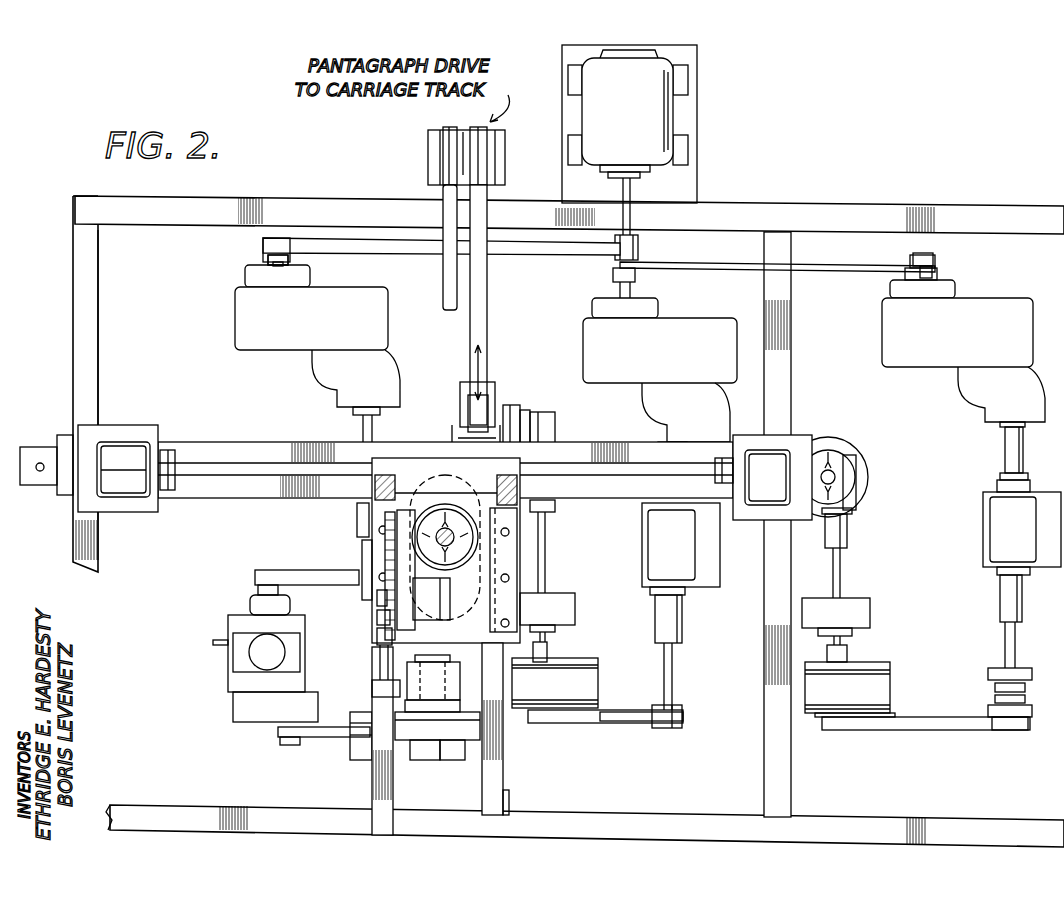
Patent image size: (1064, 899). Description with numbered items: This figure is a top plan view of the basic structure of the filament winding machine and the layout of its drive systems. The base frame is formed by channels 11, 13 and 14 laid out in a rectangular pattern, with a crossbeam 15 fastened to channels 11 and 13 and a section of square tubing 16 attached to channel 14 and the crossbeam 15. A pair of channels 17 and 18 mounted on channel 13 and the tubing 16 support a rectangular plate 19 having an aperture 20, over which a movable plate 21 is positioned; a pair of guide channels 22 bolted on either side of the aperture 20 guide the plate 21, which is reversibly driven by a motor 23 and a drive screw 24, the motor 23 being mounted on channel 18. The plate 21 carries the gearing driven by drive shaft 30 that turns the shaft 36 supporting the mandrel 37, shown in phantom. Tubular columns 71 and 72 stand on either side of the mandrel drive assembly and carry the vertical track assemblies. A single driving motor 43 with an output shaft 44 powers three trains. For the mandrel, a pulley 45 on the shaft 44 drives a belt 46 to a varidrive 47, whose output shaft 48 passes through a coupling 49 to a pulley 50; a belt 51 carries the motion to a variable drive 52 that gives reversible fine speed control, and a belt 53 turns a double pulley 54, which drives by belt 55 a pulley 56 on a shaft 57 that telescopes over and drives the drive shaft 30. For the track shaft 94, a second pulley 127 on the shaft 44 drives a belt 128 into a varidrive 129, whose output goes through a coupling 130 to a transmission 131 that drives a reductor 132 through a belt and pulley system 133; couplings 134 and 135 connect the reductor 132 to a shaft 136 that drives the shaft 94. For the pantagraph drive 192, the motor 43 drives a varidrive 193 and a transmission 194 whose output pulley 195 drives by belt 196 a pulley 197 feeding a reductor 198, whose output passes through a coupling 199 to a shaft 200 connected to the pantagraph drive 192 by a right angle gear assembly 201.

The channel 11 is at (1018, 212).
The channel 13 is at (676, 840).
The channel 14 is at (73, 325).
The crossbeam 15 is at (792, 370).
The square tubing 16 is at (216, 450).
The channel 17 is at (503, 771).
The channel 18 is at (372, 815).
The rectangular plate 19 is at (376, 640).
The aperture 20 is at (376, 622).
The movable plate 21 is at (492, 571).
The guide channels 22 is at (380, 547).
The motor 23 is at (371, 676).
The drive screw 24 is at (376, 612).
The drive shaft 30 is at (445, 600).
The shaft 36 is at (452, 527).
The mandrel 37 is at (435, 505).
The driving motor 43 is at (660, 125).
The output shaft 44 is at (632, 190).
The pulley 45 is at (640, 245).
The belt 46 is at (530, 252).
The varidrive 47 is at (234, 327).
The output shaft 48 is at (362, 432).
The coupling 49 is at (356, 525).
The pulley 50 is at (360, 570).
The belt 51 is at (292, 573).
The variable drive 52 is at (227, 622).
The belt 53 is at (310, 738).
The double pulley 54 is at (350, 748).
The belt 55 is at (410, 755).
The pulley 56 is at (447, 752).
The shaft 57 is at (452, 670).
The tubular column 71 is at (112, 430).
The tubular column 72 is at (760, 425).
The shaft 94 is at (840, 465).
The second pulley 127 is at (614, 272).
The belt 128 is at (750, 276).
The varidrive 129 is at (1000, 300).
The coupling 130 is at (1004, 457).
The transmission 131 is at (984, 524).
The reductor 132 is at (891, 684).
The belt and pulley system 133 is at (957, 737).
The coupling 134 is at (871, 610).
The coupling 135 is at (848, 535).
The shaft 136 is at (855, 514).
The pantagraph drive 192 is at (502, 401).
The varidrive 193 is at (582, 357).
The transmission 194 is at (640, 568).
The pulley 195 is at (680, 724).
The belt 196 is at (630, 724).
The pulley 197 is at (565, 725).
The reductor 198 is at (599, 682).
The coupling 199 is at (577, 615).
The shaft 200 is at (548, 525).
The right angle gear assembly 201 is at (556, 412).